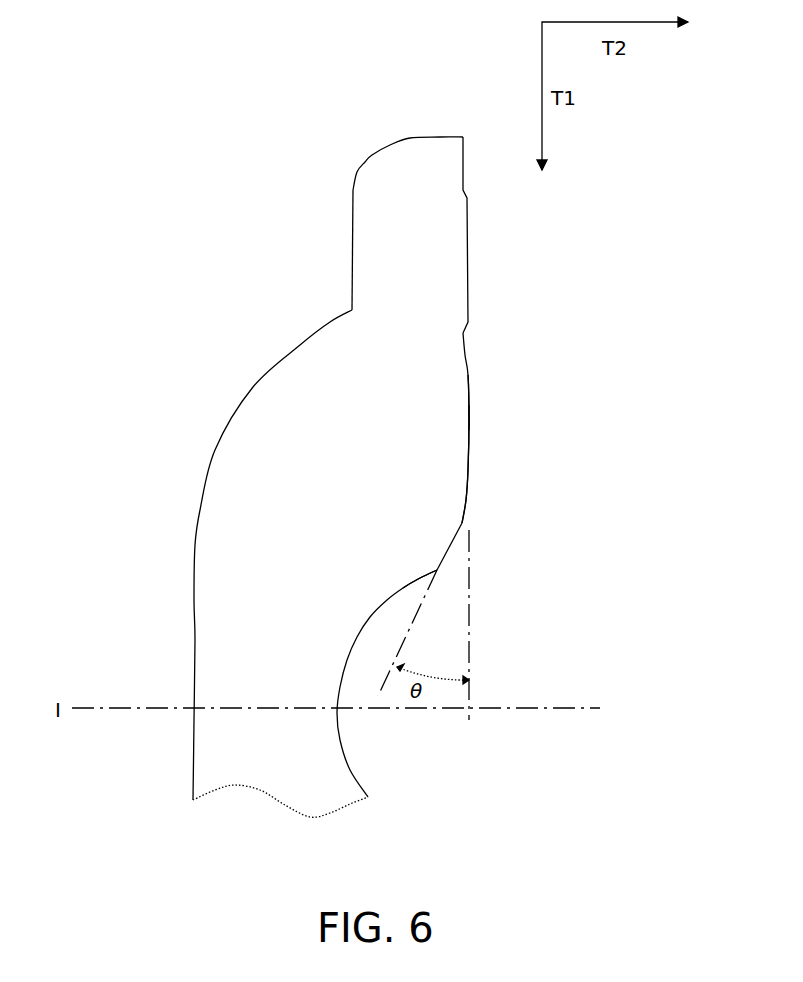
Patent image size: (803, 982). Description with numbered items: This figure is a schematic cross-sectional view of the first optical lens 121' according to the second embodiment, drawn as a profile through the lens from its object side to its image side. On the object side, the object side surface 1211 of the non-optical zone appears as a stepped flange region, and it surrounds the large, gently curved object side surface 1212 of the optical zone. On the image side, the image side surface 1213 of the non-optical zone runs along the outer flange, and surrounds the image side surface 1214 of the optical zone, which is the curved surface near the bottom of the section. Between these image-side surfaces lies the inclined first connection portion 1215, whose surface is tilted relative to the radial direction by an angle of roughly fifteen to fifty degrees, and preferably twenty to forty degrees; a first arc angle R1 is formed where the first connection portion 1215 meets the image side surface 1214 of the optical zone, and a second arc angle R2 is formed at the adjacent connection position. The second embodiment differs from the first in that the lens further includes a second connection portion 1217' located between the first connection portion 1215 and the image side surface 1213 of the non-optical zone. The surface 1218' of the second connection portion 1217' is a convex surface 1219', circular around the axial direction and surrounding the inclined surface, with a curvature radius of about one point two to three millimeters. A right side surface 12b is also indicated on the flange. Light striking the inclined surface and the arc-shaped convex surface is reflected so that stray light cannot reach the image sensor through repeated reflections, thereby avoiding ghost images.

The first optical lens 121' is at (415, 103).
The object side surface of the non-optical zone 1211 is at (352, 246).
The object side surface of the optical zone 1212 is at (195, 533).
The image side surface of the non-optical zone 1213 is at (470, 280).
The image side surface of the optical zone 1214 is at (343, 663).
The first connection portion 1215 is at (462, 523).
The second connection portion 1217' is at (412, 417).
The surface of the second connection portion 1218' is at (545, 397).
The convex surface 1219' is at (535, 445).
The right side surface 12b is at (469, 373).
The first arc angle R1 is at (436, 568).
The second arc angle R2 is at (469, 516).